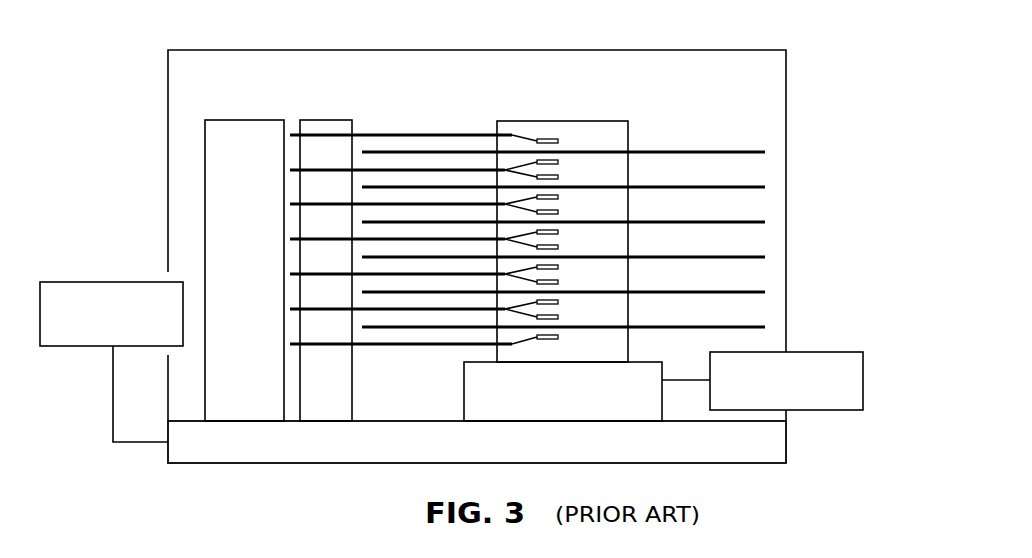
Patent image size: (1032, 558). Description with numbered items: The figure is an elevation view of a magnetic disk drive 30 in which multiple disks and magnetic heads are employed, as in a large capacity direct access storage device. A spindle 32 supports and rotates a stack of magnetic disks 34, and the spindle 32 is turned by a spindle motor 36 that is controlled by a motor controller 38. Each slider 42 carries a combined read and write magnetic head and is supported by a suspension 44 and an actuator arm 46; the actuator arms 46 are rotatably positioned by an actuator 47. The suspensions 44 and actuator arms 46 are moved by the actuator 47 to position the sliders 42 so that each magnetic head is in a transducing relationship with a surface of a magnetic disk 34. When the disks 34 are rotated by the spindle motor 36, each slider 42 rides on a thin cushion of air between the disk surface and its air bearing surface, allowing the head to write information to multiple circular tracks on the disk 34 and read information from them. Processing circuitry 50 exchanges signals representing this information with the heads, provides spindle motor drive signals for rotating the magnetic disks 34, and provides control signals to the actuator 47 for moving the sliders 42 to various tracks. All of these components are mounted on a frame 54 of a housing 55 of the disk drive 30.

The magnetic disk drive 30 is at (678, 122).
The spindle 32 is at (617, 121).
The magnetic disk 34 is at (766, 153).
The spindle motor 36 is at (553, 404).
The motor controller 38 is at (824, 411).
The slider 42 is at (562, 160).
The suspension 44 is at (532, 172).
The actuator arm 46 is at (467, 170).
The actuator 47 is at (236, 120).
The processing circuitry 50 is at (84, 282).
The frame 54 is at (221, 464).
The housing 55 is at (662, 50).